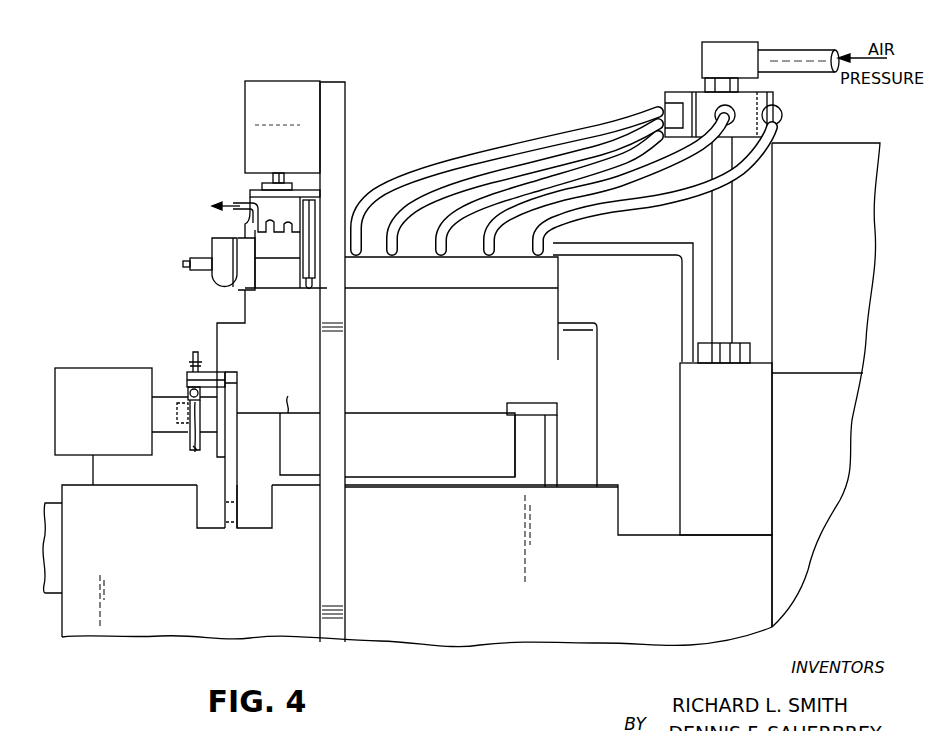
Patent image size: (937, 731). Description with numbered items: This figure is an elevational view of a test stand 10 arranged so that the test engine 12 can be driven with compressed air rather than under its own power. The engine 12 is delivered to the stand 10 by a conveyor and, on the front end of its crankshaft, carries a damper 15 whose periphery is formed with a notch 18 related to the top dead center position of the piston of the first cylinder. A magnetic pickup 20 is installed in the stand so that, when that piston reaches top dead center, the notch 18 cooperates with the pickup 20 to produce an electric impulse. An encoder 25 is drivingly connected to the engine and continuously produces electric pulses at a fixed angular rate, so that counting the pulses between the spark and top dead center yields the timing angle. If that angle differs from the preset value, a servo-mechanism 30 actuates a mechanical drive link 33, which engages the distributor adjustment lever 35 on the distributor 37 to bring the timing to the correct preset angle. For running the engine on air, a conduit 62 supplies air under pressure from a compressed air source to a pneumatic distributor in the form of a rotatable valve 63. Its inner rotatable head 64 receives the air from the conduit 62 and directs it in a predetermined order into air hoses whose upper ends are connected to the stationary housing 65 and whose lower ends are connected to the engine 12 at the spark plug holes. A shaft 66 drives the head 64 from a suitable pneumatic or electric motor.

The test stand 10 is at (487, 644).
The test engine 12 is at (537, 310).
The damper 15 is at (198, 452).
The notch 18 is at (191, 432).
The magnetic pickup 20 is at (188, 393).
The encoder 25 is at (92, 380).
The servo-mechanism 30 is at (285, 80).
The mechanical drive link 33 is at (310, 203).
The distributor adjustment lever 35 is at (302, 290).
The distributor 37 is at (270, 247).
The conduit 62 is at (795, 49).
The rotatable valve 63 is at (662, 99).
The rotatable head 64 is at (700, 82).
The stationary housing 65 is at (777, 98).
The shaft 66 is at (712, 218).